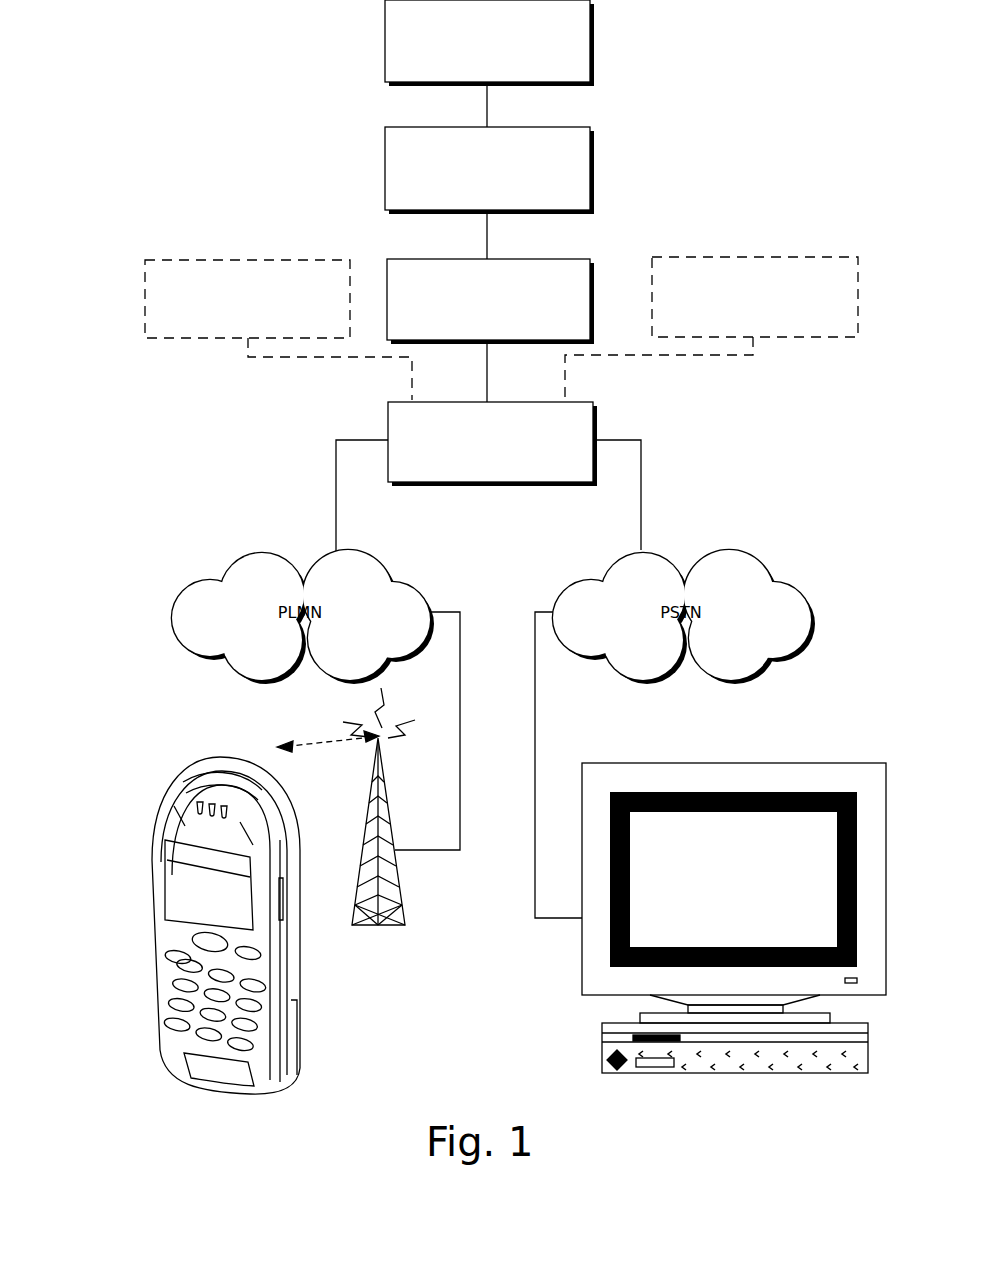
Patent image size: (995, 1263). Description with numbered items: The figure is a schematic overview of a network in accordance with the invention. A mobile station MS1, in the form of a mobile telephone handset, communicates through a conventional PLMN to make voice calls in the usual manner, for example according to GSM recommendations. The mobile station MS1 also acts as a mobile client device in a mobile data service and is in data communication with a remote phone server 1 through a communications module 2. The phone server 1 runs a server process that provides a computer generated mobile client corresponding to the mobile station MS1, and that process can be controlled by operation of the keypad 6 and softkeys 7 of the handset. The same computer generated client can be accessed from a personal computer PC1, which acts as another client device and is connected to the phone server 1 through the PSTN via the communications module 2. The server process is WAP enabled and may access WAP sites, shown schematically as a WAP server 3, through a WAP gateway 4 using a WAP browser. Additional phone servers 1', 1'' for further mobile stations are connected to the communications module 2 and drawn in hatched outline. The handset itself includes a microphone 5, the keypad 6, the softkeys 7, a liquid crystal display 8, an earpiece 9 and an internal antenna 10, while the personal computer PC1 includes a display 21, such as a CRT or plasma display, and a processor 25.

The phone server 1 is at (506, 300).
The additional phone server 1' is at (278, 325).
The additional phone server 1'' is at (728, 321).
The communications module 2 is at (596, 432).
The WAP server 3 is at (593, 36).
The WAP gateway 4 is at (593, 165).
The microphone 5 is at (205, 1078).
The keypad 6 is at (170, 1000).
The softkeys 7 is at (178, 937).
The liquid crystal display 8 is at (185, 893).
The earpiece 9 is at (200, 806).
The internal antenna 10 is at (283, 810).
The display 21 is at (771, 835).
The processor 25 is at (632, 1075).
The mobile station MS1 is at (227, 916).
The personal computer PC1 is at (738, 924).